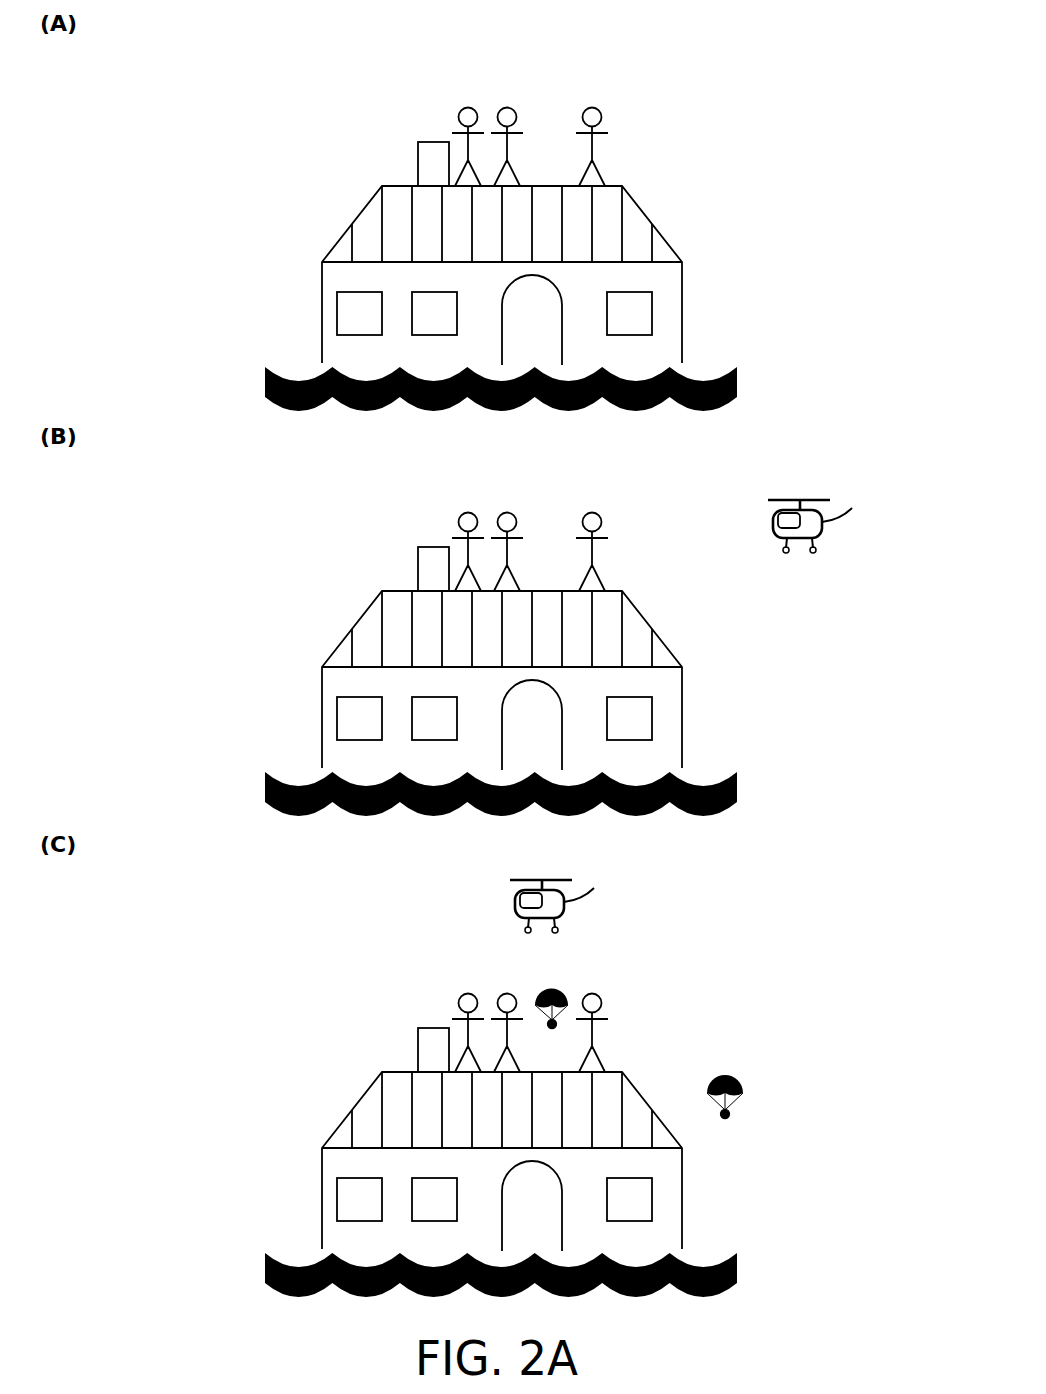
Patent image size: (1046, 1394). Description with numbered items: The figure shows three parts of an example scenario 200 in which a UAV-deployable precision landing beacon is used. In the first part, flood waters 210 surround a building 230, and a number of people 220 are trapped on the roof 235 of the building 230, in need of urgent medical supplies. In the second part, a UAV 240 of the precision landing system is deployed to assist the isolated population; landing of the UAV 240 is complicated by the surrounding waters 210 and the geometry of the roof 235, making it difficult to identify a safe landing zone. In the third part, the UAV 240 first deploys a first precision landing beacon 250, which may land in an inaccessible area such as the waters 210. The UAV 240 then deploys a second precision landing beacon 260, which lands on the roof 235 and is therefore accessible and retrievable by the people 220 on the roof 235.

The example scenario 200 is at (265, 60).
The flood waters 210 is at (710, 363).
The people 220 is at (445, 83).
The building 230 is at (682, 300).
The roof 235 is at (398, 185).
The UAV 240 is at (856, 505).
The first precision landing beacon 250 is at (725, 1075).
The second precision landing beacon 260 is at (552, 988).